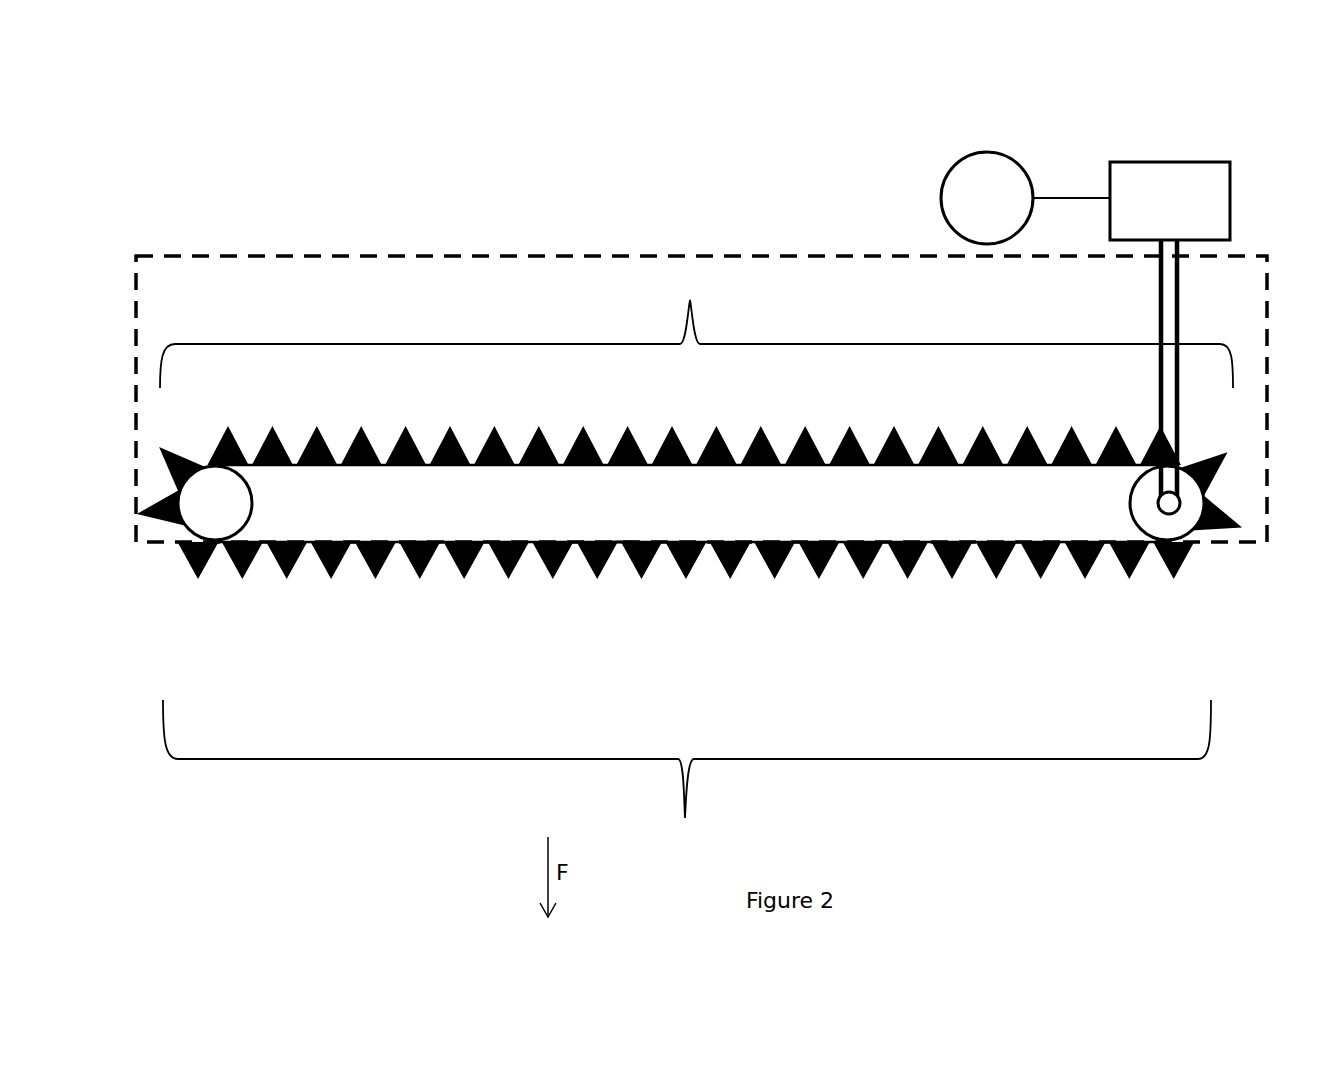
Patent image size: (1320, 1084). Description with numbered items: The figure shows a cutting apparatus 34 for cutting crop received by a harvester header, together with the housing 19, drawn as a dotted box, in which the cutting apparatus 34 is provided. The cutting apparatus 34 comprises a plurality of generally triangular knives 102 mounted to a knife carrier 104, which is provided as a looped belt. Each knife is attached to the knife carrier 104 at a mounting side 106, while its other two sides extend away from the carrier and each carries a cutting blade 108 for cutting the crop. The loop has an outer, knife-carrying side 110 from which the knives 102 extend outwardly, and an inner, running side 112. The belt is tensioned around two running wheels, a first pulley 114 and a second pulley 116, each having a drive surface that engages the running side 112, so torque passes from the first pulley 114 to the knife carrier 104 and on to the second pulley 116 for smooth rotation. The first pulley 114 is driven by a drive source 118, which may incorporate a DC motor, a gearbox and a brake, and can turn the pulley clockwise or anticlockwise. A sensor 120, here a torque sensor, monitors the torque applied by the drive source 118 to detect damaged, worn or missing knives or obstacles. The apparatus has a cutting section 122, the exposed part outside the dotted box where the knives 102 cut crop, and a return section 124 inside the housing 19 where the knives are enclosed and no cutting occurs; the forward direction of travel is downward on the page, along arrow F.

The cutting apparatus 34 is at (525, 237).
The housing 19 is at (250, 257).
The return section 124 is at (696, 329).
The cutting section 122 is at (687, 785).
The knives 102 is at (540, 432).
The knife carrier 104 is at (753, 546).
The mounting side 106 is at (420, 541).
The running side 112 is at (620, 541).
The cutting blade 108 is at (405, 563).
The knife-carrying side 110 is at (625, 546).
The second pulley 116 is at (253, 505).
The first pulley 114 is at (1130, 507).
The drive source 118 is at (1140, 162).
The sensor 120 is at (986, 152).